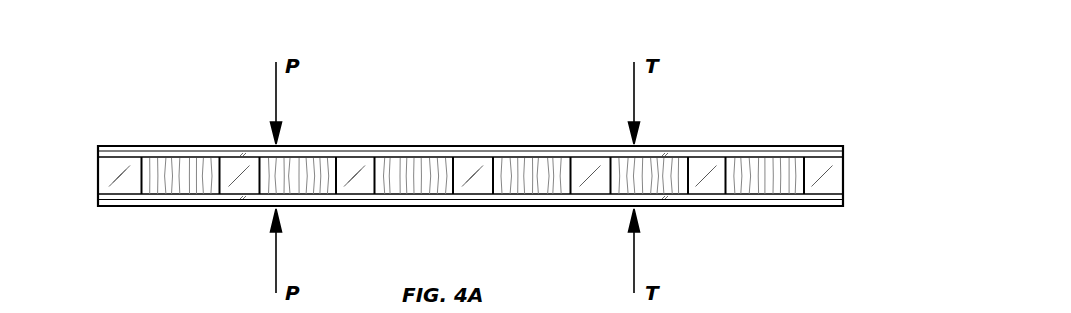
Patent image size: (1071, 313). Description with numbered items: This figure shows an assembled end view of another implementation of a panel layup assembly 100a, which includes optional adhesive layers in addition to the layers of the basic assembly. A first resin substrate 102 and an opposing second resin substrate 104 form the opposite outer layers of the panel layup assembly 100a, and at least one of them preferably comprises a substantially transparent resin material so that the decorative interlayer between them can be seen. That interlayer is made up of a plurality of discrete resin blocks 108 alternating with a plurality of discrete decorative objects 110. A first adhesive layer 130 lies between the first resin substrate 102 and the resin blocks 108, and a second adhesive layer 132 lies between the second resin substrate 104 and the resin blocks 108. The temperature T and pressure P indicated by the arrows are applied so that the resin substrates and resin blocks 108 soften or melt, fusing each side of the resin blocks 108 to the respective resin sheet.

The panel layup assembly 100a is at (118, 80).
The first resin substrate 102 is at (760, 147).
The second resin substrate 104 is at (822, 203).
The resin blocks 108 is at (590, 170).
The decorative objects 110 is at (422, 182).
The first adhesive layer 130 is at (843, 157).
The second adhesive layer 132 is at (843, 194).